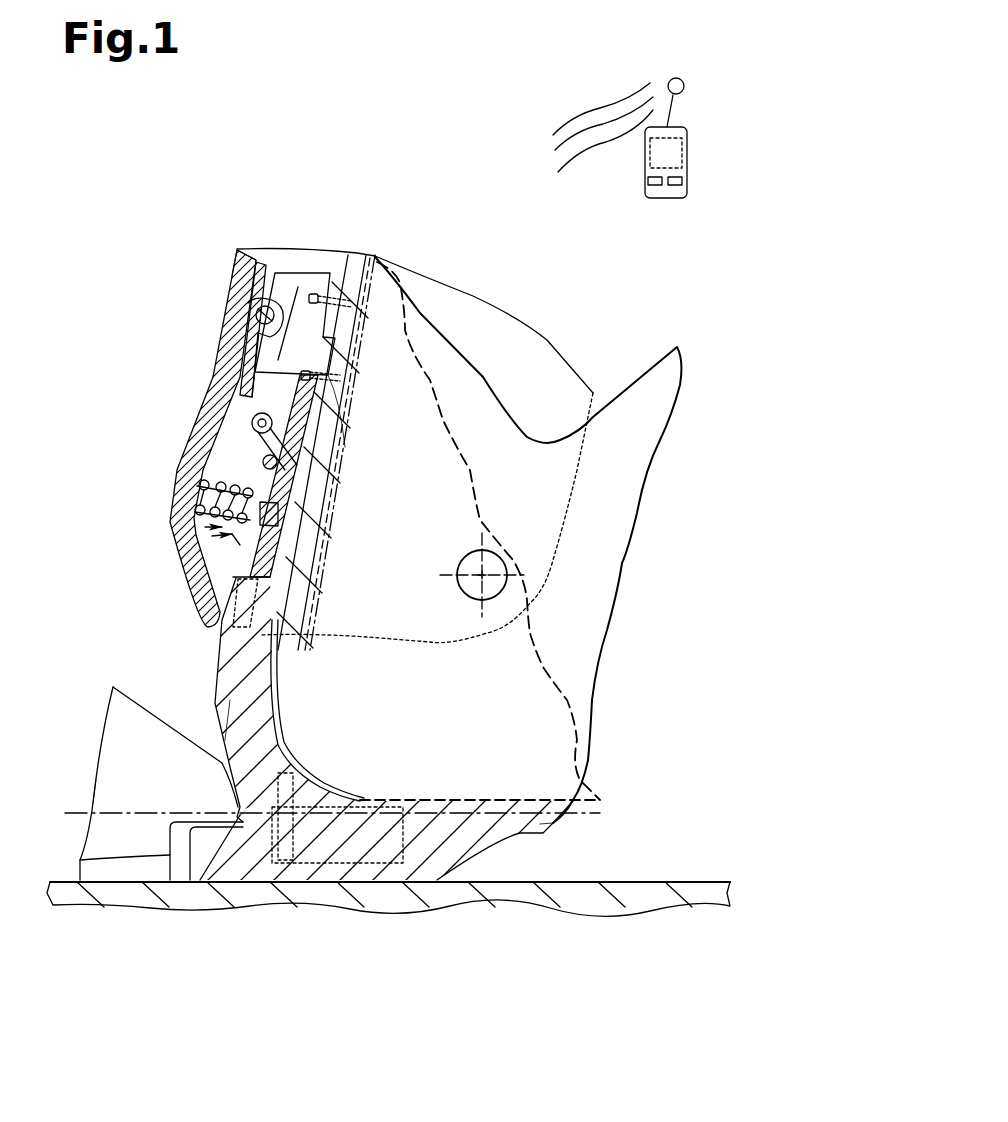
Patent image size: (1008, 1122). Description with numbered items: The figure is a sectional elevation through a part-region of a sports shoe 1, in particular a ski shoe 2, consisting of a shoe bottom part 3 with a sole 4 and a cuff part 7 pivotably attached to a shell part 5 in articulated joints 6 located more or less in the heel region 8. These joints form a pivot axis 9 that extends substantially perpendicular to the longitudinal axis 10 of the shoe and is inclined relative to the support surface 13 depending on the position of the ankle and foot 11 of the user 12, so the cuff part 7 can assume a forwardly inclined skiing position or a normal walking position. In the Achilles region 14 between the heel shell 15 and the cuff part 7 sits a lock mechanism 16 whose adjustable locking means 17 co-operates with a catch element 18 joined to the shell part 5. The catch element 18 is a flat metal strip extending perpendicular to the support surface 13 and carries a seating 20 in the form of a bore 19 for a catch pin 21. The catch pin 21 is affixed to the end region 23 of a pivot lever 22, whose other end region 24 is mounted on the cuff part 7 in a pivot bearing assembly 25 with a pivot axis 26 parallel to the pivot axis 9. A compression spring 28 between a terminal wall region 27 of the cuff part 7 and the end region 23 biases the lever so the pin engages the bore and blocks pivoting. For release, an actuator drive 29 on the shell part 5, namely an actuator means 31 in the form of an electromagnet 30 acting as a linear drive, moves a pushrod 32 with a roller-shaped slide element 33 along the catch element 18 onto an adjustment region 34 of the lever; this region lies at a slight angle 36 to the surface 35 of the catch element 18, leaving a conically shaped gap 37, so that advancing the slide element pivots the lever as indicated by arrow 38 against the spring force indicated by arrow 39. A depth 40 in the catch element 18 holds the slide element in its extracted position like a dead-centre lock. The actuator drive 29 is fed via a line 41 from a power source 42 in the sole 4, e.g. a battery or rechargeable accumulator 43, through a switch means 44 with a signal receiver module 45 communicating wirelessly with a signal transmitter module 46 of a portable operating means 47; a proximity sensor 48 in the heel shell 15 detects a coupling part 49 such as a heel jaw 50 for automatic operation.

The sports shoe 1 is at (472, 157).
The ski shoe 2 is at (473, 247).
The shoe bottom part 3 is at (543, 820).
The sole 4 is at (190, 826).
The shell part 5 is at (583, 678).
The articulated joints 6 is at (505, 526).
The cuff part 7 is at (517, 387).
The heel region 8 is at (158, 640).
The pivot axis 9 is at (485, 573).
The longitudinal axis 10 is at (83, 808).
The foot 11 is at (557, 742).
The user 12 is at (610, 773).
The support surface 13 is at (380, 887).
The Achilles region 14 is at (270, 642).
The heel shell 15 is at (237, 707).
The lock mechanism 16 is at (314, 575).
The locking means 17 is at (300, 498).
The catch element 18 is at (300, 455).
The bore 19 is at (292, 514).
The seating 20 is at (280, 508).
The catch pin 21 is at (315, 525).
The pivot lever 22 is at (240, 385).
The end region 23 is at (240, 547).
The end region 24 is at (263, 268).
The pivot bearing assembly 25 is at (235, 292).
The pivot axis 26 is at (230, 315).
The terminal wall region 27 is at (230, 422).
The compression spring 28 is at (228, 520).
The actuator drive 29 is at (287, 247).
The electromagnet 30 is at (376, 263).
The actuator means 31 is at (307, 258).
The pushrod 32 is at (283, 398).
The slide element 33 is at (283, 440).
The adjustment region 34 is at (243, 450).
The surface 35 is at (258, 448).
The angle 36 is at (222, 487).
The conically shaped gap 37 is at (237, 478).
The arrow 38 is at (223, 587).
The arrow 39 is at (213, 527).
The depth 40 is at (294, 497).
The line 41 is at (290, 707).
The power source 42 is at (407, 758).
The battery or rechargeable accumulator 43 is at (377, 830).
The switch means 44 is at (412, 755).
The signal receiver module 45 is at (285, 800).
The signal transmitter module 46 is at (673, 158).
The portable operating means 47 is at (705, 197).
The proximity sensor 48 is at (243, 790).
The coupling part 49 is at (213, 777).
The heel jaw 50 is at (125, 740).